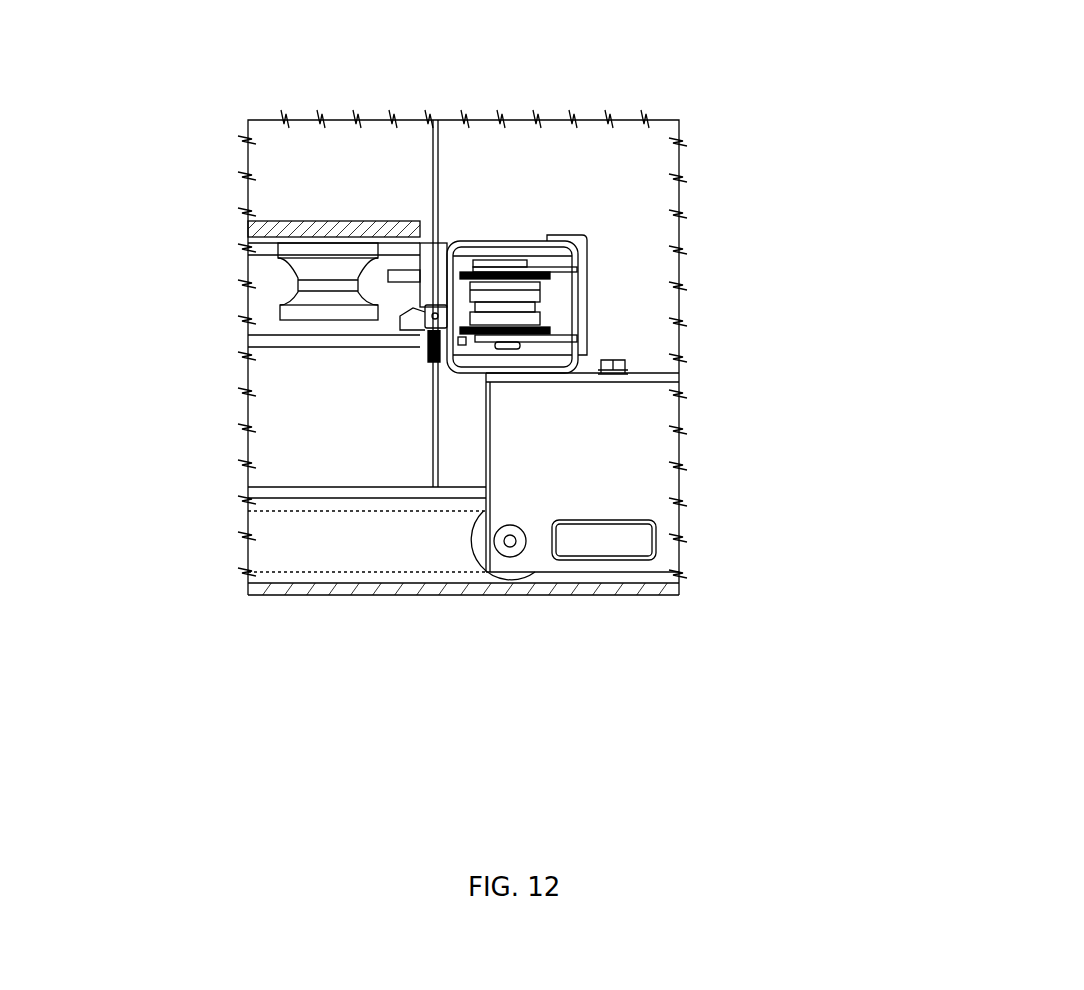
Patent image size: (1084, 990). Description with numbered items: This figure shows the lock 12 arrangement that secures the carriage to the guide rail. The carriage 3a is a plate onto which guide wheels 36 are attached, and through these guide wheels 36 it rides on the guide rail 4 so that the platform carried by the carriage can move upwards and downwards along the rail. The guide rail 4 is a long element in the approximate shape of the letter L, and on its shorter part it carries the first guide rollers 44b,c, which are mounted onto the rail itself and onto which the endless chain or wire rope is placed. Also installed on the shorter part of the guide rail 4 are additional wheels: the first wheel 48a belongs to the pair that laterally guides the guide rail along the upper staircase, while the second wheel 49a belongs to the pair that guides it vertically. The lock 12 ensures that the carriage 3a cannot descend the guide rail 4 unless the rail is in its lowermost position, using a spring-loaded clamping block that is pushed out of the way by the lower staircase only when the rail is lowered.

The carriage 3a is at (278, 221).
The guide wheels 36 is at (280, 312).
The guide rail 4 is at (666, 192).
The first guide rollers 44b,c is at (545, 313).
The first wheel 48a is at (657, 543).
The second wheel 49a is at (488, 575).
The base frame 12 is at (290, 548).